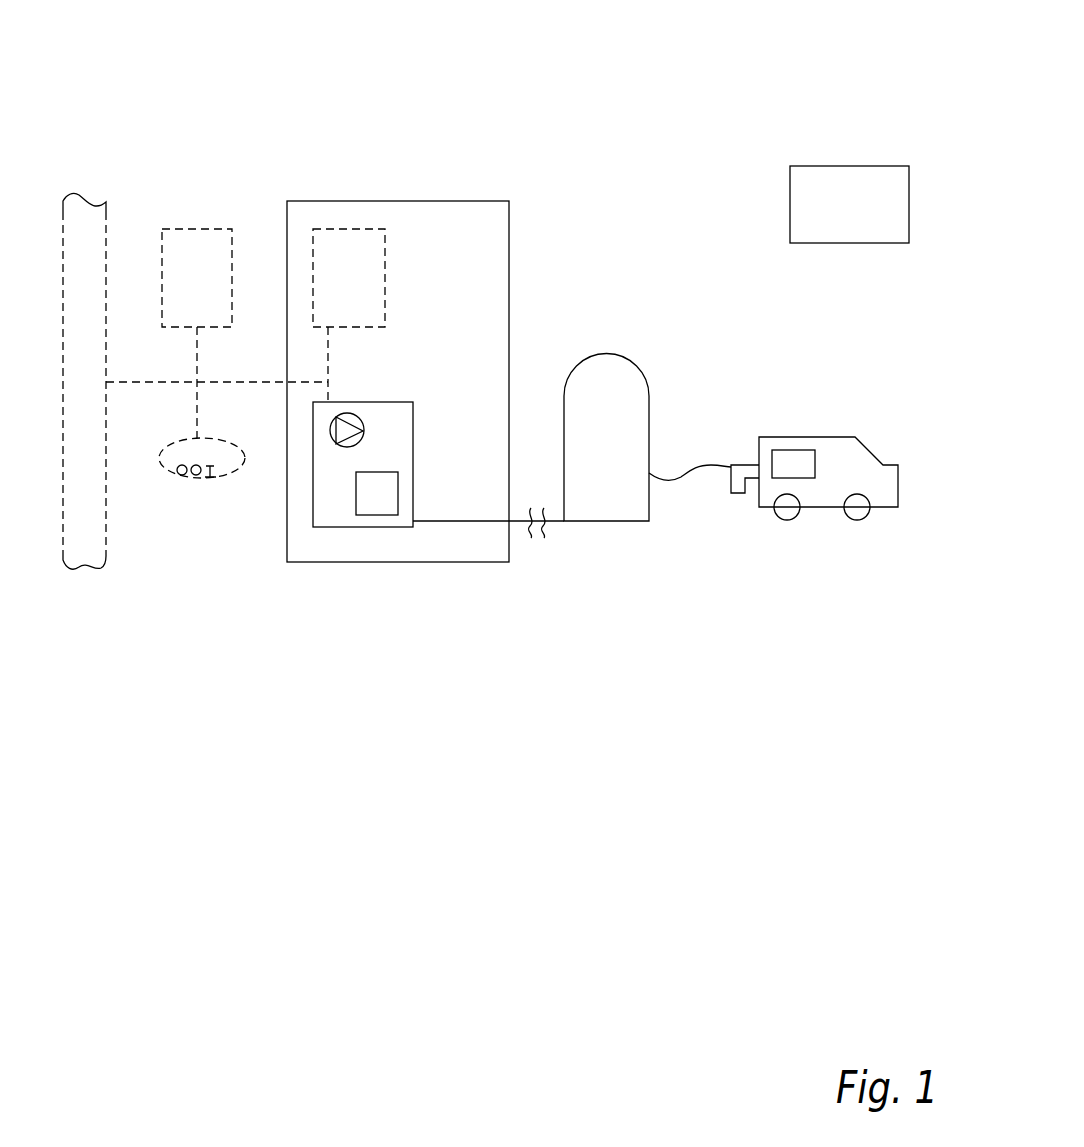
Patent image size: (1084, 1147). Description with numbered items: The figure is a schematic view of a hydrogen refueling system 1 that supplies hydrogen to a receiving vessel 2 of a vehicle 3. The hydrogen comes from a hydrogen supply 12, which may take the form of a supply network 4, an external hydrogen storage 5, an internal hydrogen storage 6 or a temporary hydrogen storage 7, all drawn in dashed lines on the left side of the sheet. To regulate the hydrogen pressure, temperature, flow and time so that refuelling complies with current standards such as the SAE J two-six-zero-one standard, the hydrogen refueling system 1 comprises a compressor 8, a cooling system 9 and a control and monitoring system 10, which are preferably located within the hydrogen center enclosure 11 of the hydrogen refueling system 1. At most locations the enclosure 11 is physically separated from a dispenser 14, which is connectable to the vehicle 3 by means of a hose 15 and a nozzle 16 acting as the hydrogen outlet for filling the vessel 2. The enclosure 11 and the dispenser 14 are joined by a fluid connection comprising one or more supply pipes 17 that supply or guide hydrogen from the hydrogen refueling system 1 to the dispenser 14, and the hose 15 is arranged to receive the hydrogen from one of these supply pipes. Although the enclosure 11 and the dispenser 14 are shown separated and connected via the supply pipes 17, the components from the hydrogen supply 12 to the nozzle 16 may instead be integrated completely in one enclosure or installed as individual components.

The hydrogen refueling system 1 is at (733, 100).
The receiving vessel 2 is at (798, 450).
The vehicle 3 is at (866, 447).
The supply network 4 is at (100, 211).
The external hydrogen storage 5 is at (200, 229).
The internal hydrogen storage 6 is at (344, 229).
The temporary hydrogen storage 7 is at (206, 475).
The compressor 8 is at (330, 428).
The cooling system 9 is at (375, 515).
The control and monitoring system 10 is at (790, 200).
The hydrogen center enclosure 11 is at (408, 201).
The hydrogen supply 12 is at (229, 98).
The dispenser 14 is at (637, 362).
The hose 15 is at (698, 467).
The nozzle 16 is at (733, 493).
The supply pipes 17 is at (558, 525).